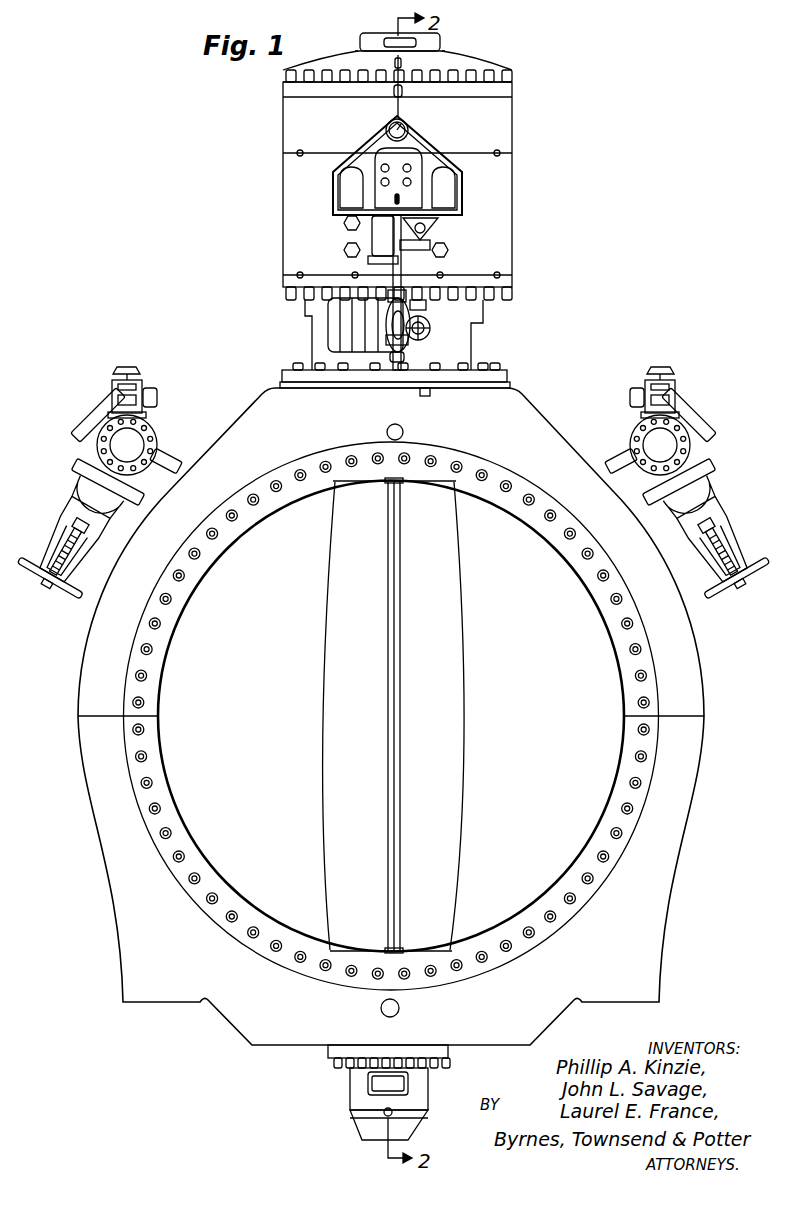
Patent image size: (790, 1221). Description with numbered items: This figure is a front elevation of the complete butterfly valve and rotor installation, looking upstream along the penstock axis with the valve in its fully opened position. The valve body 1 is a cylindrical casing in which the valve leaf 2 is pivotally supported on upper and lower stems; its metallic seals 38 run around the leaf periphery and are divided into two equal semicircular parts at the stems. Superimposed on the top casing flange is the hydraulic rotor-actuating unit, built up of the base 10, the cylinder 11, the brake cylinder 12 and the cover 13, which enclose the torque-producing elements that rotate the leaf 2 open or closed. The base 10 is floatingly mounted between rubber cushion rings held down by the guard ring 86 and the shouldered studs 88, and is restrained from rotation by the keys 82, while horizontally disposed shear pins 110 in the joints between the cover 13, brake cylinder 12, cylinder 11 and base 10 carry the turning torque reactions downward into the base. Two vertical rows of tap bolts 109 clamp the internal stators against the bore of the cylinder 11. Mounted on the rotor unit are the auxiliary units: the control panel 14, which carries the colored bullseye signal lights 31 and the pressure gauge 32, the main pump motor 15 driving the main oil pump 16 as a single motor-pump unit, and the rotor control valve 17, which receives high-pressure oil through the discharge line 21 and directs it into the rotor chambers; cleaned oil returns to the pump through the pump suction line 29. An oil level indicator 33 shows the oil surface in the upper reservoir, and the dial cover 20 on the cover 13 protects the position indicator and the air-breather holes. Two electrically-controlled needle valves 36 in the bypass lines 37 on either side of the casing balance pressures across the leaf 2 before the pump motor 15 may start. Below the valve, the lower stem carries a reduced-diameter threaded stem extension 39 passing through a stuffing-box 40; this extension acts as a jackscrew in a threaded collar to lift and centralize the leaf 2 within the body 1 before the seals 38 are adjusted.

The valve body 1 is at (80, 665).
The valve leaf 2 is at (461, 612).
The base 10 is at (473, 340).
The cylinder 11 is at (512, 206).
The brake cylinder 12 is at (512, 122).
The cover 13 is at (512, 96).
The control panel 14 is at (433, 152).
The main pump motor 15 is at (329, 326).
The main oil pump 16 is at (420, 340).
The rotor control valve 17 is at (432, 240).
The dial cover 20 is at (441, 44).
The discharge line 21 is at (384, 280).
The pump suction line 29 is at (424, 310).
The signal lights 31 is at (404, 167).
The pressure gauge 32 is at (409, 128).
The oil level indicator 33 is at (396, 63).
The needle valves 36 is at (150, 416).
The bypass lines 37 is at (130, 445).
The metallic seals 38 is at (401, 696).
The stem extension 39 is at (369, 1084).
The stuffing-box 40 is at (422, 1094).
The keys 82 is at (428, 396).
The guard ring 86 is at (283, 372).
The shouldered studs 88 is at (297, 364).
The tap bolts 109 is at (344, 224).
The shear pins 110 is at (297, 153).